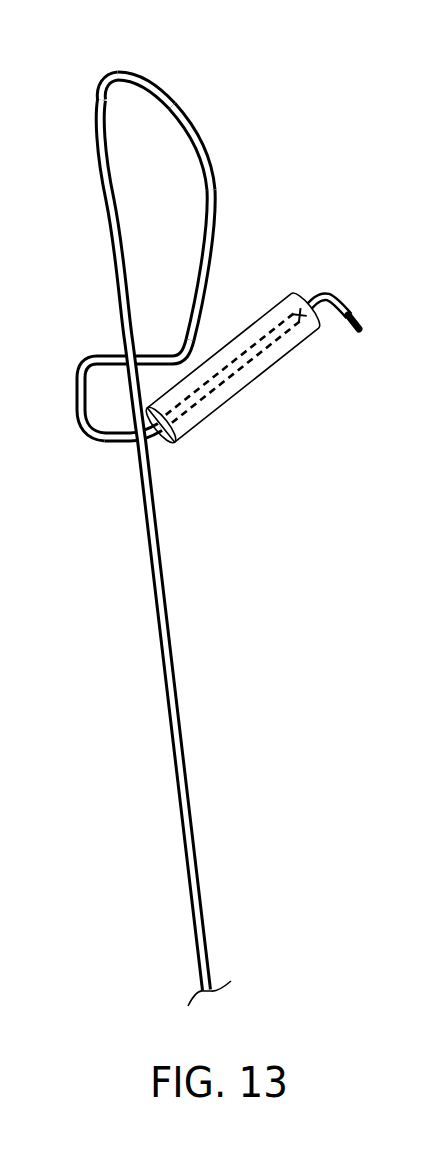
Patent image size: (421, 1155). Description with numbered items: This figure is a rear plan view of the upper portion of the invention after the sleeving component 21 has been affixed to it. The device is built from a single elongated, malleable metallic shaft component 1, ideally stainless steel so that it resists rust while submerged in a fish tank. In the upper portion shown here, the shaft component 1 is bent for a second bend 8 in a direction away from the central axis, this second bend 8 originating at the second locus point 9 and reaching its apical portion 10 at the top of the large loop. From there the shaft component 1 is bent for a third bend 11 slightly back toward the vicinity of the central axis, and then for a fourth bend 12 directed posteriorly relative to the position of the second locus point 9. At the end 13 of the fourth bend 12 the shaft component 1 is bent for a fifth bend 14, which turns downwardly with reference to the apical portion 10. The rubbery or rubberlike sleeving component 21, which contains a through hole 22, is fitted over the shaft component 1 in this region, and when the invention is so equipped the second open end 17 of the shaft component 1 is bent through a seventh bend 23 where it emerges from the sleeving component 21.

The shaft component 1 is at (145, 537).
The second bend 8 is at (172, 100).
The second locus point 9 is at (100, 88).
The apical portion 10 is at (110, 65).
The third bend 11 is at (217, 182).
The fourth bend 12 is at (178, 348).
The end of fourth bend 13 is at (83, 357).
The fifth bend 14 is at (75, 383).
The second open end 17 is at (360, 330).
The sleeving component 21 is at (240, 383).
The through hole 22 is at (152, 433).
The seventh bend 23 is at (324, 295).